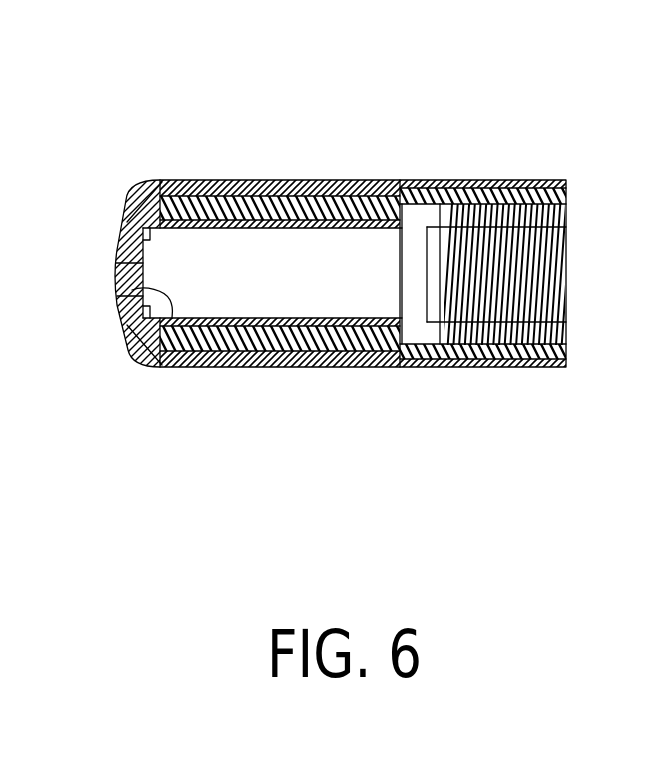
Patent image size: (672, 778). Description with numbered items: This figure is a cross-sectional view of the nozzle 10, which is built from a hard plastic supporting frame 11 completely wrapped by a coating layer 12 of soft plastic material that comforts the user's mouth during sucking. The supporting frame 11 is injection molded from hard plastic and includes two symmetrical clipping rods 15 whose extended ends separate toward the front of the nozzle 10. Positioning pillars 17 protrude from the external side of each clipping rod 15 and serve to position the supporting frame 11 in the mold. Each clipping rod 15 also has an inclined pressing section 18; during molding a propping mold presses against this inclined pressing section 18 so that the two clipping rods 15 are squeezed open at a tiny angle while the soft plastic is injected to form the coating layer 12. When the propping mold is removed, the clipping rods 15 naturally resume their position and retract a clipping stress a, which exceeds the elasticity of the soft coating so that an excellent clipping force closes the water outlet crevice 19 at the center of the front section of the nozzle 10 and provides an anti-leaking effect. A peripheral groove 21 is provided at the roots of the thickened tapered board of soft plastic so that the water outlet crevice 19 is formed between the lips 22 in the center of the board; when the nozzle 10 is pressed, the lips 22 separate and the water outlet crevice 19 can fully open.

The nozzle 10 is at (473, 143).
The supporting frame 11 is at (567, 293).
The coating layer 12 is at (370, 181).
The clipping rods 15 is at (243, 352).
The positioning pillars 17 is at (170, 181).
The inclined pressing section 18 is at (173, 232).
The water outlet crevice 19 is at (118, 268).
The peripheral groove 21 is at (135, 331).
The lips 22 is at (140, 262).
The clipping stress a is at (220, 156).